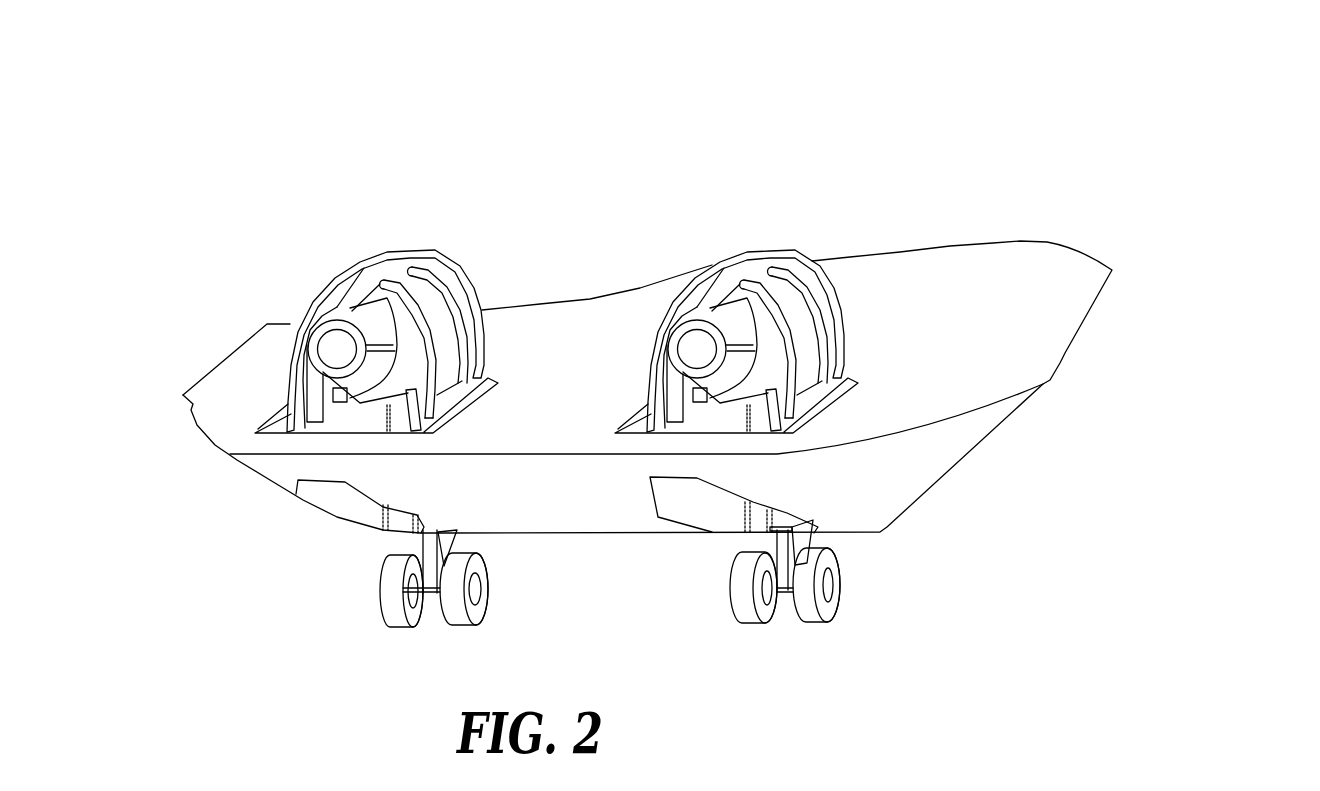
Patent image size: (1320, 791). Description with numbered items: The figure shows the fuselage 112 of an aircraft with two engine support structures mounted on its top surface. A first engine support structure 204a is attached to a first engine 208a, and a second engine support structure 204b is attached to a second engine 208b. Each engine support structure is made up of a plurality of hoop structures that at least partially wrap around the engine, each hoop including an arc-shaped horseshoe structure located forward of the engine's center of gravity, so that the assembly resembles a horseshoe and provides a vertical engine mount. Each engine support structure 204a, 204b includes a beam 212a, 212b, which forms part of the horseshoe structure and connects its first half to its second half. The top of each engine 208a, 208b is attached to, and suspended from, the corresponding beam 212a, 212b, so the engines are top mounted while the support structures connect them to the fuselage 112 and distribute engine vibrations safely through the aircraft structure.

The fuselage 112 is at (886, 310).
The first engine support structure 204a is at (381, 272).
The second engine support structure 204b is at (760, 272).
The first engine 208a is at (343, 348).
The second engine 208b is at (708, 354).
The beam 212a is at (362, 276).
The beam 212b is at (718, 262).